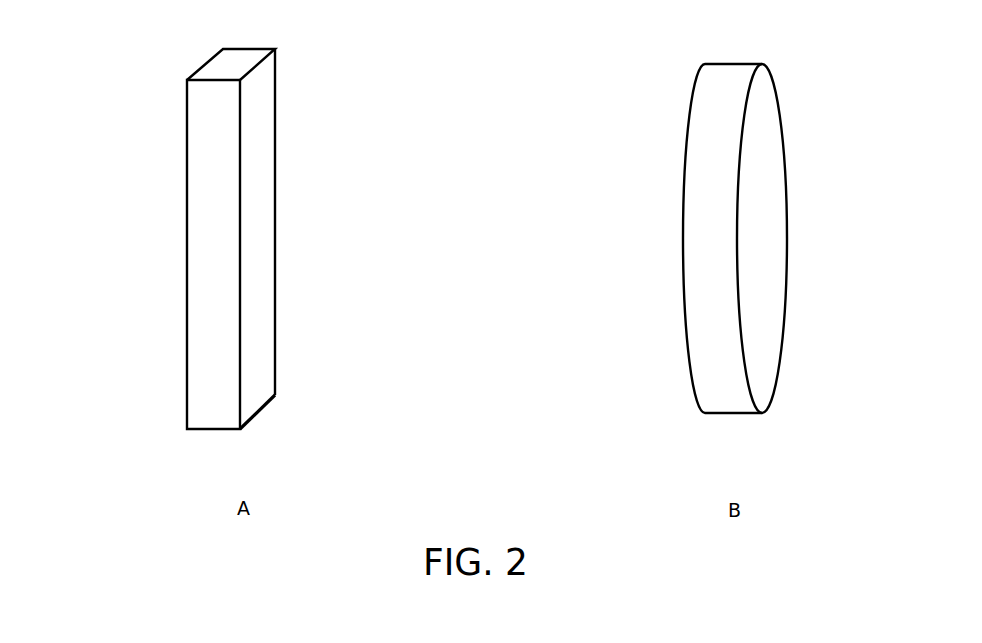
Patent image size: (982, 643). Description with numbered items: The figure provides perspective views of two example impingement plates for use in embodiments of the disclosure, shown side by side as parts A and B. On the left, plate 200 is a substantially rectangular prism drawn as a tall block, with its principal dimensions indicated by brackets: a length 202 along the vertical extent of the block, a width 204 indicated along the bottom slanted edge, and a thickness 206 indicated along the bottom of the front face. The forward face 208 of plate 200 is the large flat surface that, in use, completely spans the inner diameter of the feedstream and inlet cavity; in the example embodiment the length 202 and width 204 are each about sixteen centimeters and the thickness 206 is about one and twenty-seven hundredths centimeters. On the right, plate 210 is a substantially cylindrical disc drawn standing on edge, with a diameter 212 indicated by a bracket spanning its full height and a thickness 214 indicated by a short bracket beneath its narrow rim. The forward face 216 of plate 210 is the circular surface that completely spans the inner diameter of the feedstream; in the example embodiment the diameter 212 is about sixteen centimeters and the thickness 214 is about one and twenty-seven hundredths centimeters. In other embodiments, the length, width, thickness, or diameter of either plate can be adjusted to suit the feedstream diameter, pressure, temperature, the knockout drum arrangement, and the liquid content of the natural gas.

The plate 200 is at (138, 76).
The length 202 is at (299, 273).
The width 204 is at (281, 400).
The thickness 206 is at (192, 467).
The forward face 208 is at (257, 100).
The plate 210 is at (725, 266).
The diameter 212 is at (692, 413).
The thickness 214 is at (762, 425).
The forward face 216 is at (770, 223).